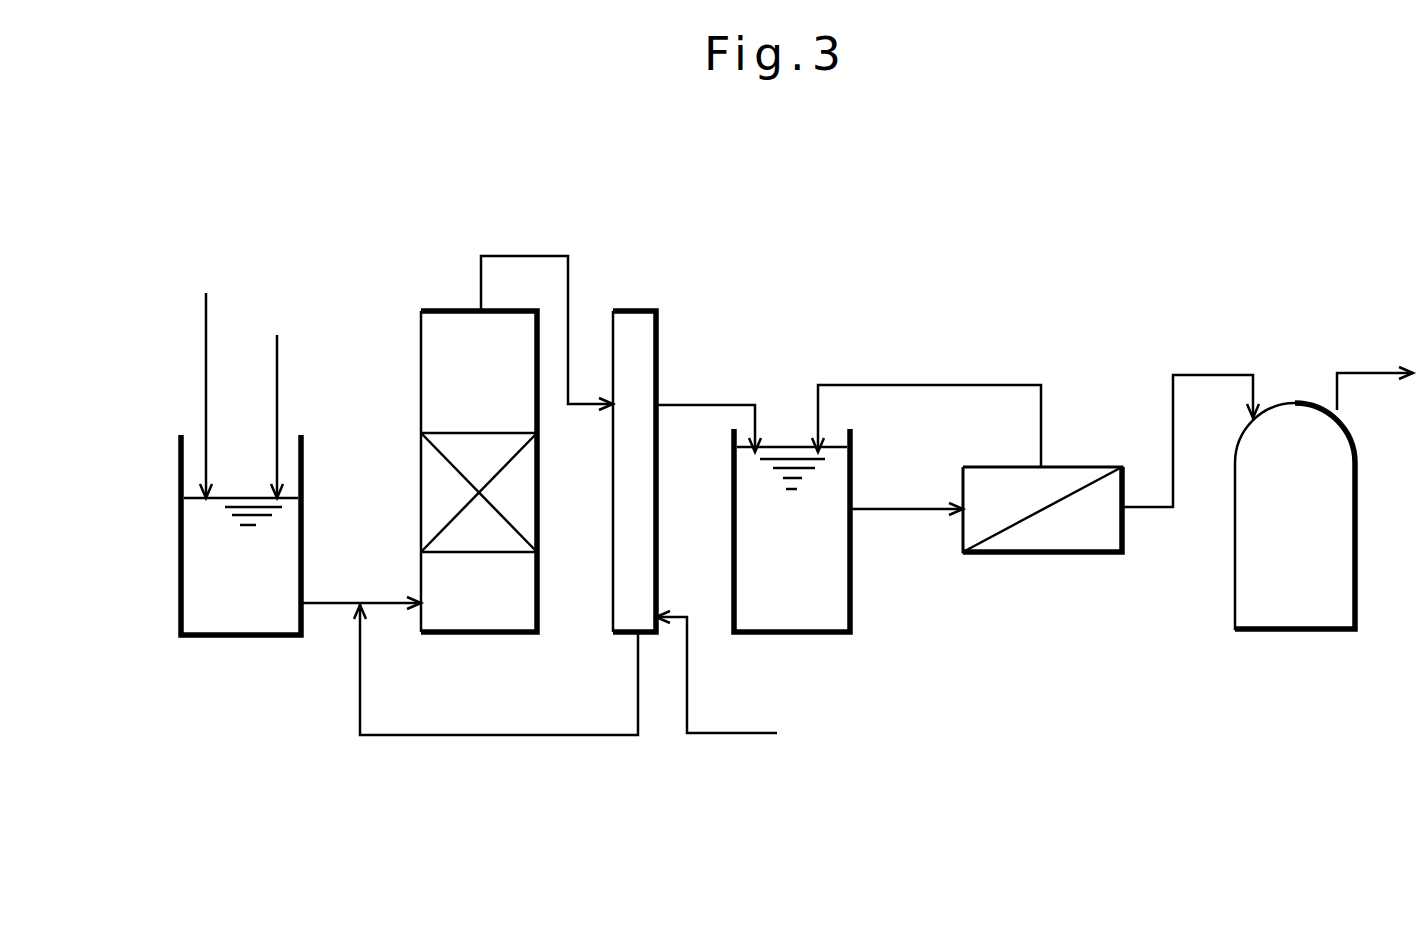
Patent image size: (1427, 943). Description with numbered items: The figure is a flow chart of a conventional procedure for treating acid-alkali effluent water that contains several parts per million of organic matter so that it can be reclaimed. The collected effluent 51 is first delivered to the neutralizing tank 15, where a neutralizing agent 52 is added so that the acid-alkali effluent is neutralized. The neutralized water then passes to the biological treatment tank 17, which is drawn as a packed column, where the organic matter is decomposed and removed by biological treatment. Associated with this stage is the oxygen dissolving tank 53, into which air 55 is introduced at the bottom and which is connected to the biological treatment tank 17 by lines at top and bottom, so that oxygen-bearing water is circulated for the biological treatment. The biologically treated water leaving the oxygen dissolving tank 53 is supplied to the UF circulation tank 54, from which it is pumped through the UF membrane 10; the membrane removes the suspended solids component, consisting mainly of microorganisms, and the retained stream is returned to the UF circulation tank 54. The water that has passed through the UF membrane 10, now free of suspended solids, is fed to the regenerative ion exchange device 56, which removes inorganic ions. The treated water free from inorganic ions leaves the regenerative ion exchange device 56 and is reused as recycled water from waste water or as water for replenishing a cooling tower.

The UF membrane 10 is at (1057, 535).
The neutralizing tank 15 is at (242, 638).
The biological treatment tank 17 is at (421, 332).
The collected effluent 51 is at (206, 320).
The neutralizing agent 52 is at (307, 398).
The oxygen dissolving tank 53 is at (634, 310).
The UF circulation tank 54 is at (793, 636).
The air 55 is at (757, 736).
The regenerative ion exchange device 56 is at (1295, 615).